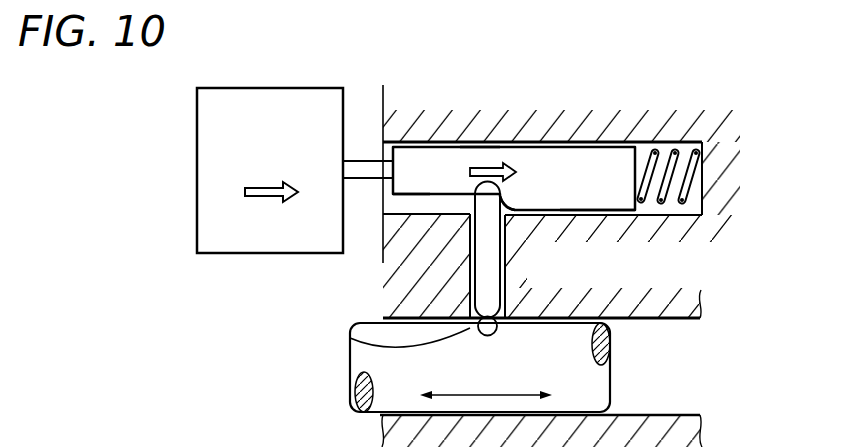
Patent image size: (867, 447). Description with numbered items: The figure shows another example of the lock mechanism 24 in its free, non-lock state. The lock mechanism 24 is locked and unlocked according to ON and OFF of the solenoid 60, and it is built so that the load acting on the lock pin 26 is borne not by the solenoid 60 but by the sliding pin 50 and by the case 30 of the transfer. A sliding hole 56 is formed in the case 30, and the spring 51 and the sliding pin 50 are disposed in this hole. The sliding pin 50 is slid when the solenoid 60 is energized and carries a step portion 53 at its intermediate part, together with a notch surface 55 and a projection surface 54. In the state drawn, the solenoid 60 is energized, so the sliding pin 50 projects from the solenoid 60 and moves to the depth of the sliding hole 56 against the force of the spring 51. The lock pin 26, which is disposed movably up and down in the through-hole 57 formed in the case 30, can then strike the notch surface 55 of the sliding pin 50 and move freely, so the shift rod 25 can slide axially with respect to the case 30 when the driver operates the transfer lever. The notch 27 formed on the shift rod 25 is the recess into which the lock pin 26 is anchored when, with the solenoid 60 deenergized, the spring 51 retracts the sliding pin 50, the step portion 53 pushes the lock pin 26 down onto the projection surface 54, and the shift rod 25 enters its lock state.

The lock mechanism 24 is at (361, 128).
The shift rod 25 is at (598, 382).
The lock pin 26 is at (470, 263).
The notch 27 is at (352, 339).
The case 30 is at (668, 271).
The sliding pin 50 is at (567, 150).
The spring 51 is at (661, 150).
The step portion 53 is at (501, 210).
The projection surface 54 is at (597, 211).
The notch surface 55 is at (426, 196).
The sliding hole 56 is at (478, 150).
The through-hole 57 is at (508, 321).
The solenoid 60 is at (249, 238).